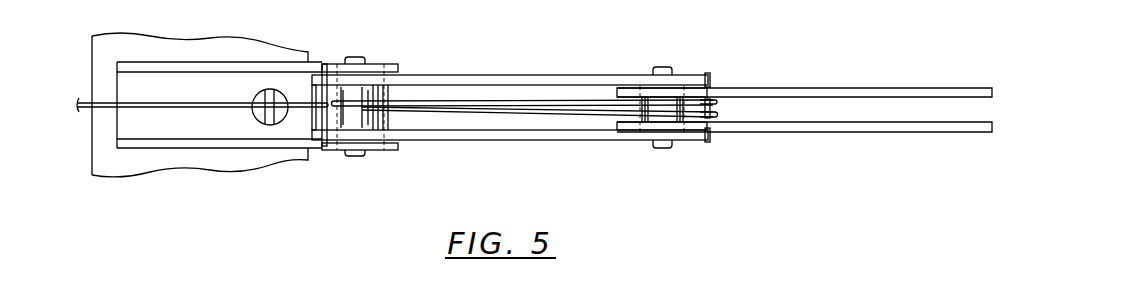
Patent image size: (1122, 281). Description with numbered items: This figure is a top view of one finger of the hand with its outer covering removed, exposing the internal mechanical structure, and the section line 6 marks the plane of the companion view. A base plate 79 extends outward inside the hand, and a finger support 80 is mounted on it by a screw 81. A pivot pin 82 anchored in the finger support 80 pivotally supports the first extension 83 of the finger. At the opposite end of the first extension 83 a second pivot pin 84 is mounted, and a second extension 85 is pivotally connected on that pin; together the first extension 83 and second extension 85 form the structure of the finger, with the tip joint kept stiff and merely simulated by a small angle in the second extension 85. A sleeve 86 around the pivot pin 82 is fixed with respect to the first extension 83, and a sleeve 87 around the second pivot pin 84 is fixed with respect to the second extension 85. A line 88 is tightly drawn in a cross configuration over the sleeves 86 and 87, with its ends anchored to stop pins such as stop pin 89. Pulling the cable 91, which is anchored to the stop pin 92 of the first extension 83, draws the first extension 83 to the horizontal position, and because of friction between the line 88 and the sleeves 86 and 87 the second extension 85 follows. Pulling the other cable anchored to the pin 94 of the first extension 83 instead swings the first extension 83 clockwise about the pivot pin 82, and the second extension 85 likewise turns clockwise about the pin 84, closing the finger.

The section line 6- 6 is at (122, 115).
The base plate 79 is at (190, 164).
The finger support 80 is at (229, 62).
The screw 81 is at (253, 114).
The pivot pin 82 is at (358, 57).
The first extension 83 is at (495, 75).
The second pivot pin 84 is at (663, 149).
The second extension 85 is at (858, 88).
The sleeve 86 is at (362, 90).
The sleeve 87 is at (652, 100).
The line 88 is at (555, 101).
The stop pin 89 is at (712, 78).
The cable 91 is at (130, 103).
The stop pin 92 is at (322, 70).
The pin 94 is at (390, 118).